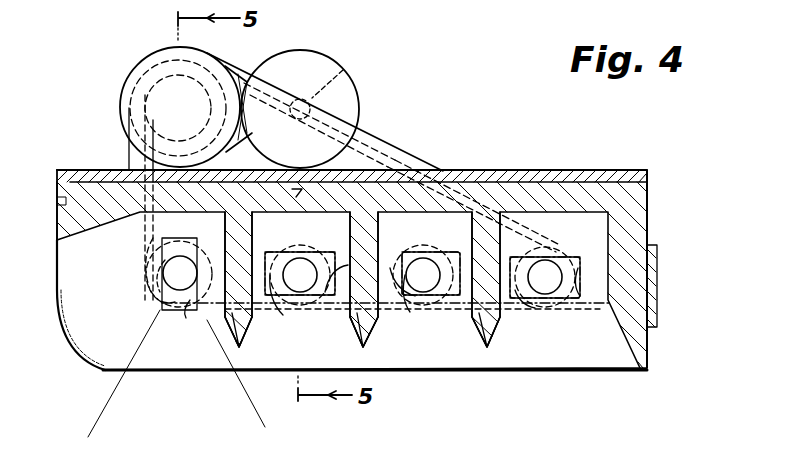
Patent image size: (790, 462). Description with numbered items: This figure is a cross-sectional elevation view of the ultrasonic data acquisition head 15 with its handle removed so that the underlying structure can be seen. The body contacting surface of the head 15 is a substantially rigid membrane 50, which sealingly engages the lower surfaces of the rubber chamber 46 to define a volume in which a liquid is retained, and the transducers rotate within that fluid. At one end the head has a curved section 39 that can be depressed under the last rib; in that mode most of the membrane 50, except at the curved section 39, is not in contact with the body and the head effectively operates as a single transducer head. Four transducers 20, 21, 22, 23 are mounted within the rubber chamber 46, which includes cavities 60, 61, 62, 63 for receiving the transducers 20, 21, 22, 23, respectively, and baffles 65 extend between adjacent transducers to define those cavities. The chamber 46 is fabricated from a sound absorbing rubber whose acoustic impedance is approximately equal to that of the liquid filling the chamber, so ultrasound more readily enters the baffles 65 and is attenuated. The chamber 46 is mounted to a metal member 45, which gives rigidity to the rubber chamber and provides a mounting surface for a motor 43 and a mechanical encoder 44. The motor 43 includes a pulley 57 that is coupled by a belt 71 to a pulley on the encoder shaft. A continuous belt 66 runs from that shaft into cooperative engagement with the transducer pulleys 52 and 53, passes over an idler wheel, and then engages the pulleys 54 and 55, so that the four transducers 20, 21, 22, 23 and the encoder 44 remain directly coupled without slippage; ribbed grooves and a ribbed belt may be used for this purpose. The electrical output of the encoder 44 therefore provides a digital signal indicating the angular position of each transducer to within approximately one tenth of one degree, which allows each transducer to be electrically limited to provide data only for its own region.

The head 15 is at (681, 164).
The transducer 20 is at (191, 308).
The transducer 21 is at (306, 296).
The transducer 22 is at (425, 296).
The transducer 23 is at (578, 291).
The curved section 39 is at (79, 343).
The motor 43 is at (353, 103).
The mechanical encoder 44 is at (141, 59).
The metal member 45 is at (478, 170).
The rubber chamber 46 is at (557, 184).
The membrane 50 is at (570, 372).
The pulley 52 is at (147, 276).
The pulley 53 is at (300, 248).
The pulley 54 is at (452, 250).
The pulley 55 is at (573, 252).
The pulley 57 is at (343, 70).
The cavity 60 is at (76, 263).
The cavity 61 is at (250, 222).
The cavity 62 is at (399, 222).
The cavity 63 is at (542, 232).
The baffles 65 is at (238, 348).
The belt 66 is at (392, 165).
The belt 71 is at (241, 74).